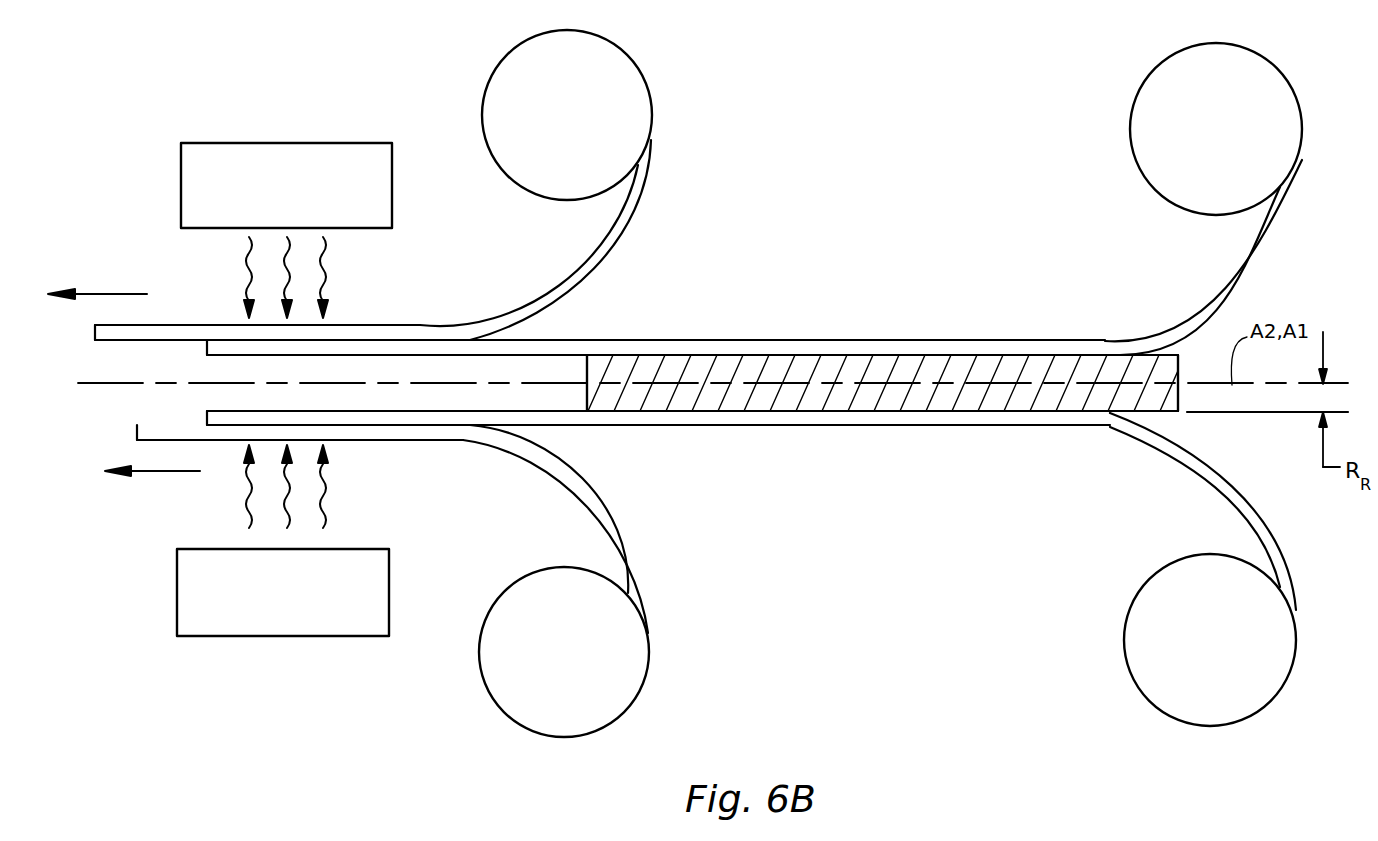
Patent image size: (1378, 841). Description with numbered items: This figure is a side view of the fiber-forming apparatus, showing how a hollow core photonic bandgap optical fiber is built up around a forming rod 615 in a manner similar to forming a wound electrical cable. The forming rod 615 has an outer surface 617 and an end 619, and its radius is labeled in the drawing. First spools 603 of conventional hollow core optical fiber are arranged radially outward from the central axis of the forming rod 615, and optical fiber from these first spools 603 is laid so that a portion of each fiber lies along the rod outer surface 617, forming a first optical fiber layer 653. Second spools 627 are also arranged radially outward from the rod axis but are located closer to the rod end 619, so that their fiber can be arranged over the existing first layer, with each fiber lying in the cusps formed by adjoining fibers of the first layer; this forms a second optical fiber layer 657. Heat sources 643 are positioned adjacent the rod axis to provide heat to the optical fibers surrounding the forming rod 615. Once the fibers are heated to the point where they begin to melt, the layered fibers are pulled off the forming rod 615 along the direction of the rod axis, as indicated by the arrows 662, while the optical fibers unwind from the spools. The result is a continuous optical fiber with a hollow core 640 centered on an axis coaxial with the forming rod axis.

The first spools 603 is at (1150, 102).
The forming rod 615 is at (927, 363).
The outer surface 617 is at (1177, 353).
The end 619 is at (586, 378).
The second spools 627 is at (502, 87).
The hollow core 640 is at (523, 413).
The heat sources 643 is at (185, 180).
The first optical fiber layer 653 is at (776, 340).
The second optical fiber layer 657 is at (428, 300).
The arrows 662 is at (105, 293).